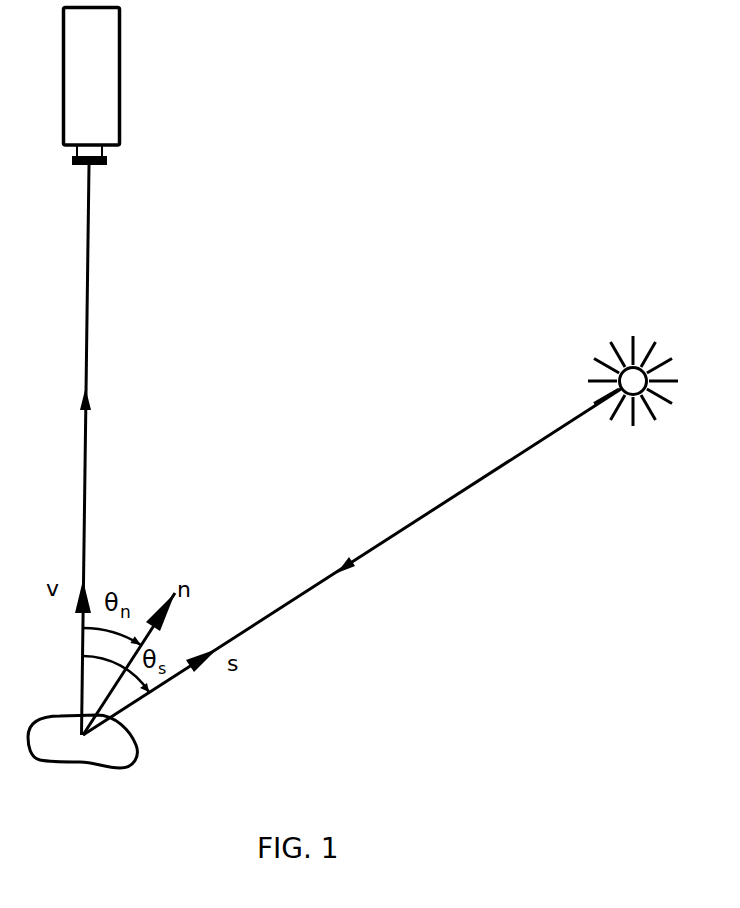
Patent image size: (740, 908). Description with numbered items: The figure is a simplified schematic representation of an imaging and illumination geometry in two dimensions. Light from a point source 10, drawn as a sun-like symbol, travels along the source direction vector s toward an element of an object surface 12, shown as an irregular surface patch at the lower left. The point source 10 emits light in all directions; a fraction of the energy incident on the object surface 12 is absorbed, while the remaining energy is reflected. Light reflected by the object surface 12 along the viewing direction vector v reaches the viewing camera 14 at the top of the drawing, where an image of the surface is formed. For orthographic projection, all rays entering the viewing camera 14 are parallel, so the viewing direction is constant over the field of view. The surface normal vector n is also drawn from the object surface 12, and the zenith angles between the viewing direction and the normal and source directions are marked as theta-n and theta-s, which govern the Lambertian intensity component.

The point source 10 is at (657, 367).
The object surface 12 is at (138, 752).
The viewing camera 14 is at (120, 78).